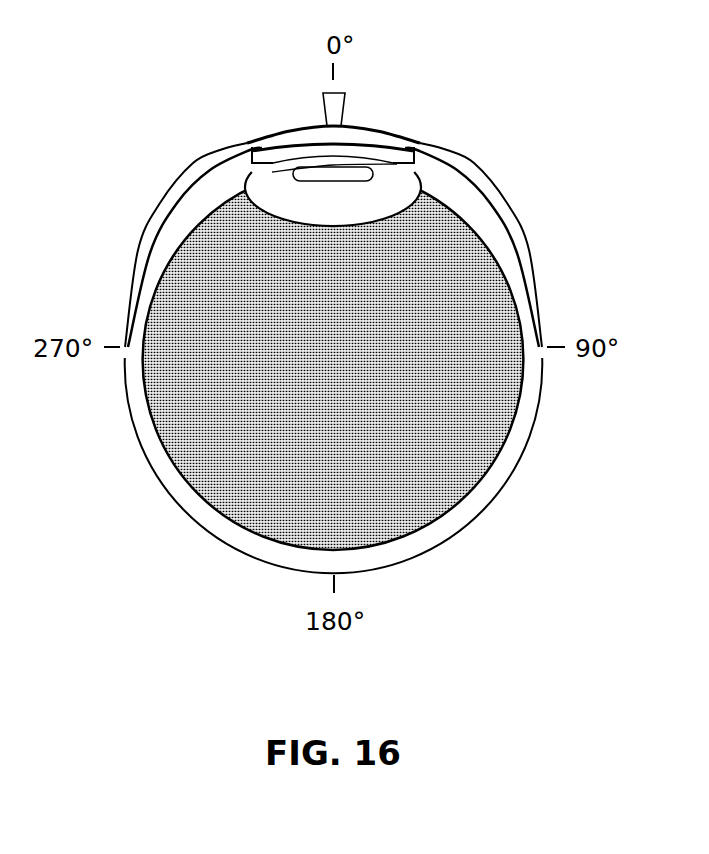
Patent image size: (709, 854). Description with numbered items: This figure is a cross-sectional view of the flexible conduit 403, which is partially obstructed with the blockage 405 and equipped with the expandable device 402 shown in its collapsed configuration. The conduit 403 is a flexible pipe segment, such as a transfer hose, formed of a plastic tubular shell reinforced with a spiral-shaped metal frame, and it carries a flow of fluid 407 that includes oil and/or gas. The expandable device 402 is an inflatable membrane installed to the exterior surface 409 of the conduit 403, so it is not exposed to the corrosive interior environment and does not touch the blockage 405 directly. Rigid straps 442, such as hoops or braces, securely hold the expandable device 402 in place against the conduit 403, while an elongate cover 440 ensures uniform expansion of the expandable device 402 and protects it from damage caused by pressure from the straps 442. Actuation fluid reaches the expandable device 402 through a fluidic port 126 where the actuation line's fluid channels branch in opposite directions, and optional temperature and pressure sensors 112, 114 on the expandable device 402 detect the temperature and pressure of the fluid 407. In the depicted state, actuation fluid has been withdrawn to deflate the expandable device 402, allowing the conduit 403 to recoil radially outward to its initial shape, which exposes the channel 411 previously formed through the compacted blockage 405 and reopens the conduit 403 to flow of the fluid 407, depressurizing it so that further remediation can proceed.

The fluidic port 126 is at (323, 108).
The elongate cover 440 is at (413, 150).
The rigid strap 442 is at (255, 145).
The temperature sensor 112 is at (472, 155).
The pressure sensor 114 is at (340, 167).
The expandable device 402 is at (259, 178).
The blockage 405 is at (356, 342).
The fluid 407 is at (455, 222).
The channel 411 is at (378, 230).
The flexible conduit 403 is at (397, 349).
The exterior surface 409 is at (494, 496).